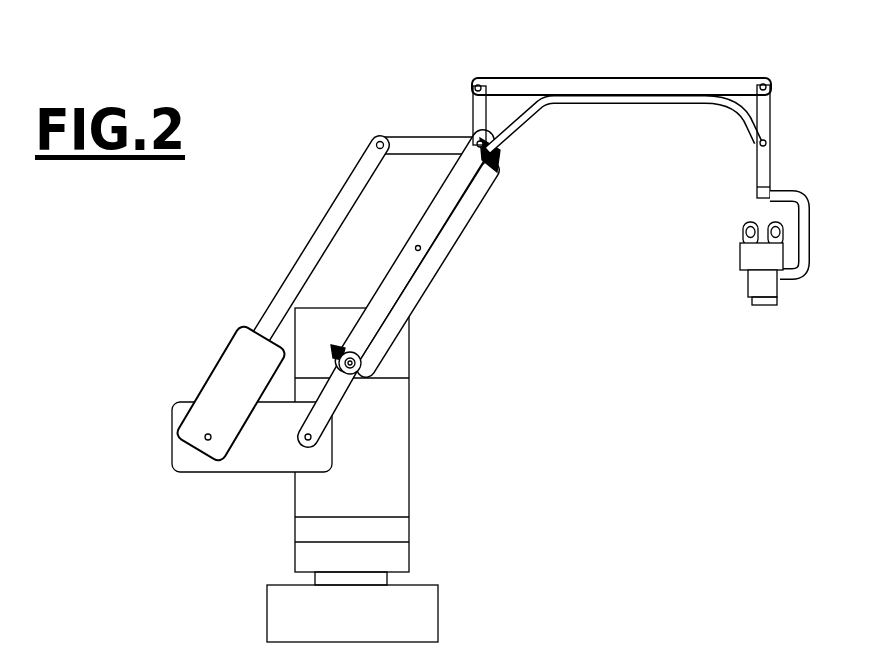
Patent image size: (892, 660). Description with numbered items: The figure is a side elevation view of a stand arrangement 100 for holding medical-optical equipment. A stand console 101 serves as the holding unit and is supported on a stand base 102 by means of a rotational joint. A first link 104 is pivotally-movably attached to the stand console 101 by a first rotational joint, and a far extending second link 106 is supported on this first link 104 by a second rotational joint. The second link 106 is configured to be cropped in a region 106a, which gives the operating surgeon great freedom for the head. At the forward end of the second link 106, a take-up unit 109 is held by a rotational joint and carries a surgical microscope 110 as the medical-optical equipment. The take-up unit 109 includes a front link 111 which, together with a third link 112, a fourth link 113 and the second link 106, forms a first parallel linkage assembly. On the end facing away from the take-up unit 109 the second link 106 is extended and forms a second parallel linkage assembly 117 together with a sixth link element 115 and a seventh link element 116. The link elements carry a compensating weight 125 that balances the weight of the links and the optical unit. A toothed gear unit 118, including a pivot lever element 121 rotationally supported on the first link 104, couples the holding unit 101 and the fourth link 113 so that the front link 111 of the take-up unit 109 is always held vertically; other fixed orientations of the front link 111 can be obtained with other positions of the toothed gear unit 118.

The stand arrangement 100 is at (466, 328).
The stand console 101 is at (390, 502).
The stand base 102 is at (420, 620).
The first link 104 is at (337, 400).
The second link 106 is at (525, 105).
The region 106a is at (657, 120).
The take-up unit 109 is at (766, 180).
The surgical microscope 110 is at (756, 288).
The front link 111 is at (768, 106).
The third link 112 is at (515, 90).
The fourth link 113 is at (472, 112).
The sixth link element 115 is at (345, 190).
The seventh link element 116 is at (263, 457).
The second parallel linkage assembly 117 is at (228, 271).
The toothed gear unit 118 is at (461, 256).
The pivot lever element 121 is at (385, 300).
The compensating weight 125 is at (215, 375).